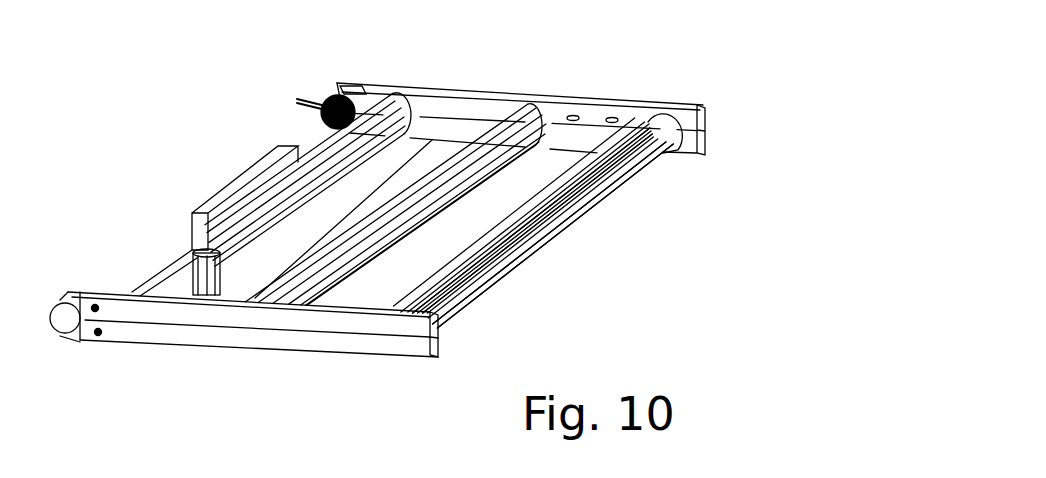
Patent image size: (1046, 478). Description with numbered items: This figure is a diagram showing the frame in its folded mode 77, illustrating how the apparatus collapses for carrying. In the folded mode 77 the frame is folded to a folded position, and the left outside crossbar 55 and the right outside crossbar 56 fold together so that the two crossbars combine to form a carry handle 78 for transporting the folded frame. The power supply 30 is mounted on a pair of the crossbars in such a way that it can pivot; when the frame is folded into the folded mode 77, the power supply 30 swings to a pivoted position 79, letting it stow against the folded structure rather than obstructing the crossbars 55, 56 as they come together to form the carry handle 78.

The power supply 30 is at (217, 203).
The left outside crossbar 55 is at (650, 158).
The right outside crossbar 56 is at (590, 191).
The folded mode 77 is at (600, 112).
The carry handle 78 is at (540, 249).
The pivoted position 79 is at (273, 158).